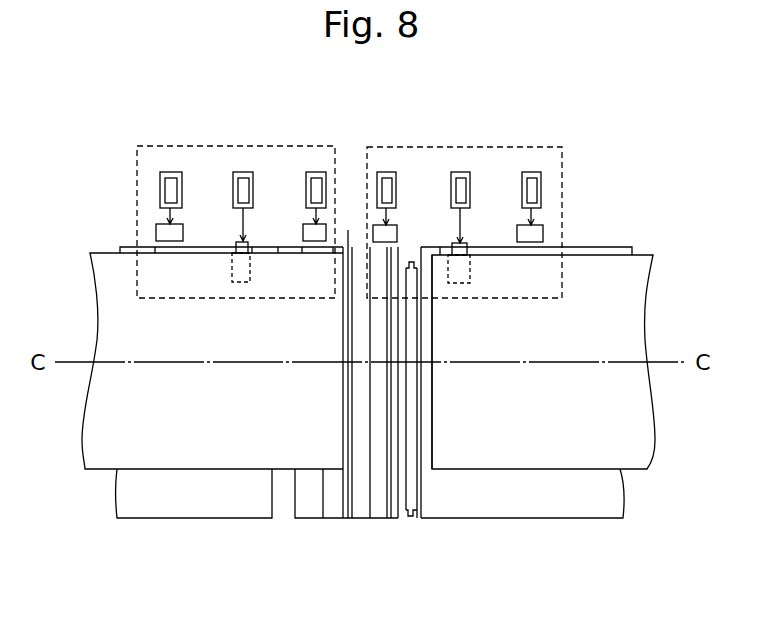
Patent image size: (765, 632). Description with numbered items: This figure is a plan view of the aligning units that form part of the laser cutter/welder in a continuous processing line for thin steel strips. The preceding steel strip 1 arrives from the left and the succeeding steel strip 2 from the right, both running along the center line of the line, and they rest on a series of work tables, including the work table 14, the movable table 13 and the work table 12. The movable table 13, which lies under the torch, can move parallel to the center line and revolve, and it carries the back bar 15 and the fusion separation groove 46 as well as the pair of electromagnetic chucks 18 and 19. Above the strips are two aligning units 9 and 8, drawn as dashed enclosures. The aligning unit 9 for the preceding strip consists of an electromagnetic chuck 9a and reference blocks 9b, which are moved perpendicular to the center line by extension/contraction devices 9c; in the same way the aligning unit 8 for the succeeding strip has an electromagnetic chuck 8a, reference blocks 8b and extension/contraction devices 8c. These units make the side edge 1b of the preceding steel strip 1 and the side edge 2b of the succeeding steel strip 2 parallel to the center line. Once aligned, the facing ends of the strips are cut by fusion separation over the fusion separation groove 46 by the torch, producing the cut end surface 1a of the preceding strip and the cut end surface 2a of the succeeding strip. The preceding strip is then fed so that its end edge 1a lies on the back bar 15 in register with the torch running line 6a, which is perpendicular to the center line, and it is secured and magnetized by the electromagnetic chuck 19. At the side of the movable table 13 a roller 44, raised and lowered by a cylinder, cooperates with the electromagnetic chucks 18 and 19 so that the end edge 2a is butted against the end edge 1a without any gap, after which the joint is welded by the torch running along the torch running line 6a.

The preceding steel strip 1 is at (88, 432).
The cut end surface of preceding steel strip 1a is at (345, 432).
The side edge of preceding steel strip 1b is at (152, 253).
The succeeding steel strip 2 is at (645, 448).
The cut end surface of succeeding steel strip 2a is at (430, 430).
The side edge of succeeding steel strip 2b is at (593, 248).
The torch running line 6a is at (345, 518).
The aligning unit 8 is at (466, 147).
The electromagnetic chuck 8a is at (462, 250).
The reference block 8b is at (392, 235).
The extension/contraction device 8c is at (391, 197).
The aligning unit 9 is at (232, 146).
The electromagnetic chuck 9a is at (240, 248).
The reference block 9b is at (160, 233).
The extension/contraction device 9c is at (165, 197).
The work table 12 is at (583, 517).
The movable table 13 is at (310, 518).
The work table 14 is at (160, 513).
The back bar 15 is at (350, 505).
The electromagnetic chuck 18 is at (332, 518).
The electromagnetic chuck 19 is at (368, 500).
The roller 44 is at (412, 500).
The fusion separation groove 46 is at (392, 507).